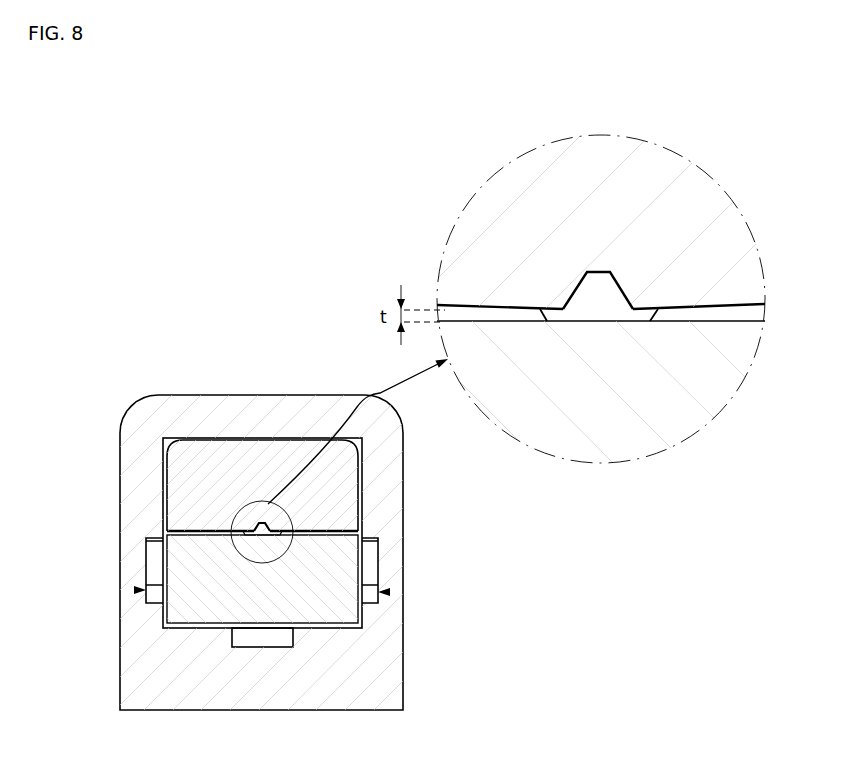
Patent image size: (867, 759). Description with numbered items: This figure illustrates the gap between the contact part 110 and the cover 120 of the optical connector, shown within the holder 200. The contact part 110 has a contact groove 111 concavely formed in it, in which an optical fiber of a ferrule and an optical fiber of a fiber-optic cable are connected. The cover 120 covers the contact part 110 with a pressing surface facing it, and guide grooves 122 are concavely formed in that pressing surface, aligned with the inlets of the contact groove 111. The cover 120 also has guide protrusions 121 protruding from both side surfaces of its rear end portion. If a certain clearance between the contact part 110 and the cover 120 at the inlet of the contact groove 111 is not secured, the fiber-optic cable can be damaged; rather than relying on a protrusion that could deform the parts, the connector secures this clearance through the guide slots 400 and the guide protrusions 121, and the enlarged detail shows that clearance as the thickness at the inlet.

The holder 200 is at (202, 348).
The contact part 110 is at (183, 483).
The contact groove 111 is at (598, 272).
The guide grooves 122 is at (590, 323).
The cover 120 is at (197, 603).
The guide protrusions 121 is at (153, 567).
The guide slots 400 is at (134, 591).